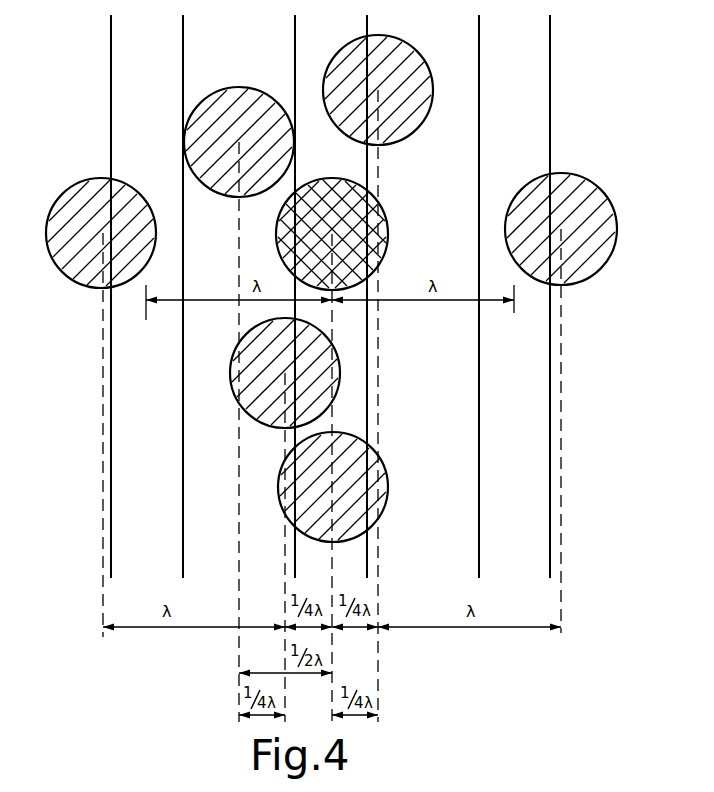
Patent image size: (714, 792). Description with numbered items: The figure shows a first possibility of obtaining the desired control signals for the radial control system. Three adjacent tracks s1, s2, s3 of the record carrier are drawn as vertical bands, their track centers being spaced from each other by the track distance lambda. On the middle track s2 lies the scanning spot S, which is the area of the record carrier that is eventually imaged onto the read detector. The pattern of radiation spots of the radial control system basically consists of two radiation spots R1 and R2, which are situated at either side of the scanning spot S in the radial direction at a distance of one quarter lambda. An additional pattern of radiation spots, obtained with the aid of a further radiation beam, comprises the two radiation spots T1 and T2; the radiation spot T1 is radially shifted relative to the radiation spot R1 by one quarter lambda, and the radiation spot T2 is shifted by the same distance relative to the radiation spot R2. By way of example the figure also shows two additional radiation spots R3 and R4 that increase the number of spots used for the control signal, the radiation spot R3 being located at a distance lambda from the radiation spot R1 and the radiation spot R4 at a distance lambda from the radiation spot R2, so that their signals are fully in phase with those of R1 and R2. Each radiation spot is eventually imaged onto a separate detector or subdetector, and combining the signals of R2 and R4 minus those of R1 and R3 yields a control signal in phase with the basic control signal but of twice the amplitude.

The track s1 is at (147, 62).
The track s2 is at (323, 75).
The track s3 is at (518, 72).
The radiation spot R1 is at (413, 82).
The radiation spot R2 is at (249, 395).
The additional radiation spot R3 is at (583, 193).
The additional radiation spot R4 is at (126, 195).
The radiation spot T1 is at (372, 473).
The radiation spot T2 is at (251, 100).
The scanning spot S is at (372, 228).